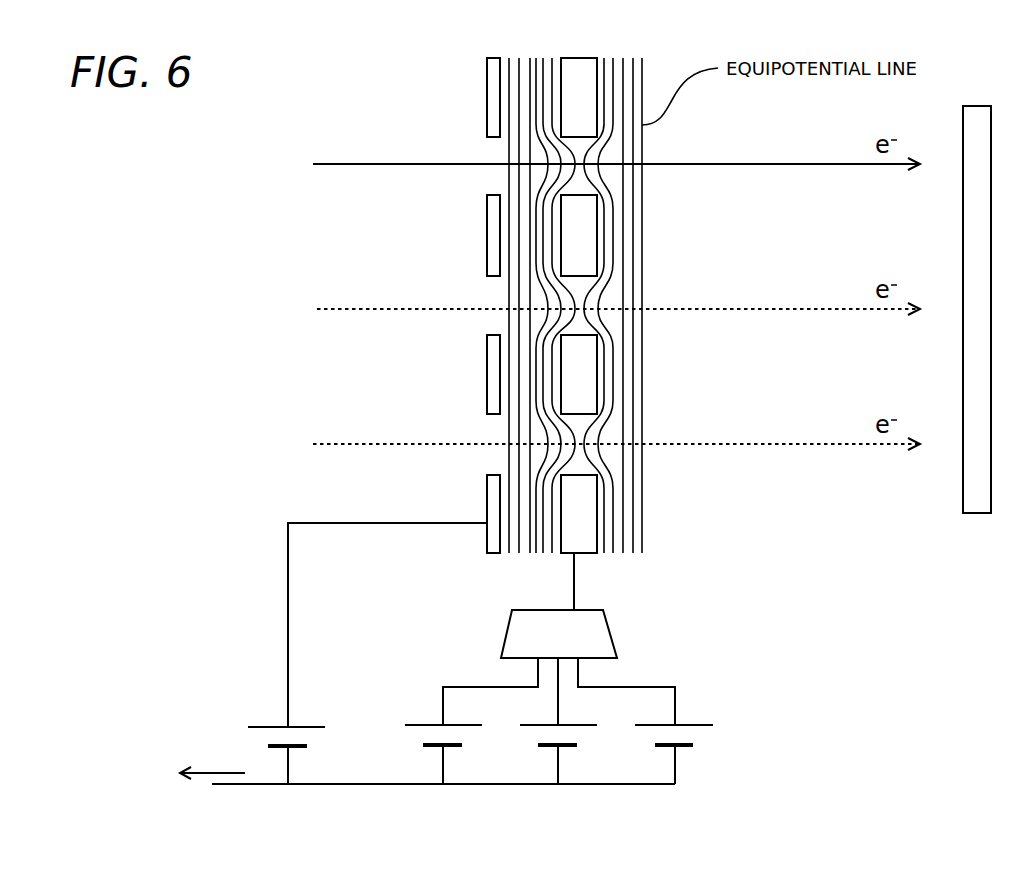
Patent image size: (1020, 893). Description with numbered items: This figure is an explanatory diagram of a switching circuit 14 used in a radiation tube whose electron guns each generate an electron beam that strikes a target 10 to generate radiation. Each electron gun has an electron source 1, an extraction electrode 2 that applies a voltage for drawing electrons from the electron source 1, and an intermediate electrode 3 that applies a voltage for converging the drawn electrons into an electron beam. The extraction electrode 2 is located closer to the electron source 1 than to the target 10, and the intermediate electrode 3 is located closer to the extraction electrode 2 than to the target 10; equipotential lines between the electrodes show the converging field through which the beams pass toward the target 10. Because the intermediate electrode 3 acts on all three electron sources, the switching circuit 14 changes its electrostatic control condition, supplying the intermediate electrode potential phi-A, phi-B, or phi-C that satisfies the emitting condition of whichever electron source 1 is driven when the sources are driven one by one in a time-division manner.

The electron source 1 is at (232, 750).
The extraction electrode 2 is at (496, 554).
The intermediate electrode 3 is at (597, 553).
The target 10 is at (976, 514).
The switching circuit 14 is at (603, 642).